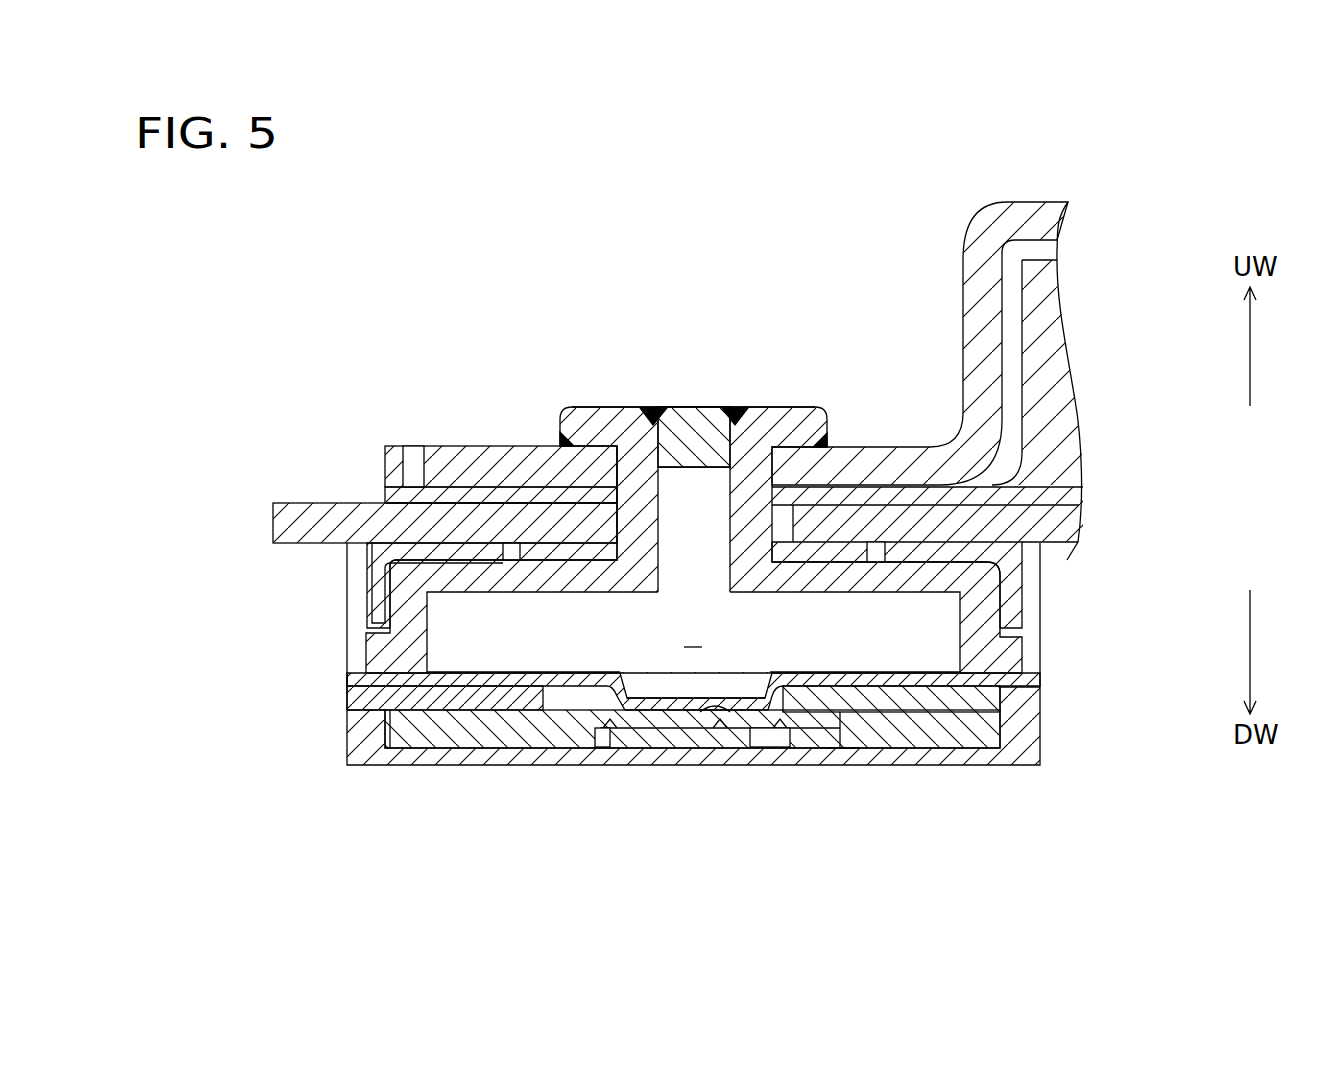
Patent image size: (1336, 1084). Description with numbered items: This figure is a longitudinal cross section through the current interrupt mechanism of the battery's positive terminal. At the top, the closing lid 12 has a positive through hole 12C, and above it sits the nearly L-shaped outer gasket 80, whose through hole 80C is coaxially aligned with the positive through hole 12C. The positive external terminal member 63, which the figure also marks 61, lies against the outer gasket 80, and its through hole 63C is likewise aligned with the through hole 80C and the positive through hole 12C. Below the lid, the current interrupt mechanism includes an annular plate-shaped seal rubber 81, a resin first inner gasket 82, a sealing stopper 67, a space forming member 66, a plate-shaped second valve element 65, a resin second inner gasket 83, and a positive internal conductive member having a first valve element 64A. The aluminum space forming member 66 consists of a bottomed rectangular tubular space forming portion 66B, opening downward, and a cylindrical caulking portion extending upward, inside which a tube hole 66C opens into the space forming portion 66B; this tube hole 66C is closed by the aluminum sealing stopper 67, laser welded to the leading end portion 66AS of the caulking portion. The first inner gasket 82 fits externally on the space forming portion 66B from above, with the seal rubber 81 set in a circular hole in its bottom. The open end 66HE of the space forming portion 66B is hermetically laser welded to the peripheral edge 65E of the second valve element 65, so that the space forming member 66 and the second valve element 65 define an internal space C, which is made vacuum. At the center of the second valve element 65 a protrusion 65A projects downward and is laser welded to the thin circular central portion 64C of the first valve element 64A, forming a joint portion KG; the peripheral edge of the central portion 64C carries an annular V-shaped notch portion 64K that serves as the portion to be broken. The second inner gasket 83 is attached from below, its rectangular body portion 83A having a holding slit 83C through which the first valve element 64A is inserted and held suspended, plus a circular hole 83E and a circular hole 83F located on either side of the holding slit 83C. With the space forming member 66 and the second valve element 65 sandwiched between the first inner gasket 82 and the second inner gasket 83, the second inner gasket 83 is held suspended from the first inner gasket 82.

The closing lid 12 is at (275, 528).
The positive through hole 12C is at (612, 478).
The outer gasket 80 is at (1058, 412).
The through hole 80C is at (605, 495).
The seal rubber 81 is at (543, 540).
The first inner gasket 82 is at (367, 568).
The positive external terminal member 63 is at (726, 294).
The cover 61 is at (1028, 200).
The through hole 63C is at (628, 420).
The space forming member 66 is at (400, 610).
The space forming portion 66B is at (580, 540).
The tube hole 66C is at (690, 432).
The leading end portion 66AS is at (772, 407).
The open end 66HE is at (400, 722).
The sealing stopper 67 is at (697, 425).
The second valve element 65 is at (385, 674).
The peripheral edge 65E is at (390, 660).
The protrusion 65A is at (662, 725).
The first valve element 64A is at (571, 730).
The annular notch portion 64K is at (608, 735).
The central portion 64C is at (747, 730).
The joint portion KG is at (720, 727).
The second inner gasket 83 is at (355, 767).
The body portion 83A is at (690, 713).
The holding slit 83C is at (947, 740).
The circular hole 83E is at (877, 747).
The circular hole 83F is at (833, 750).
The internal space C is at (693, 632).